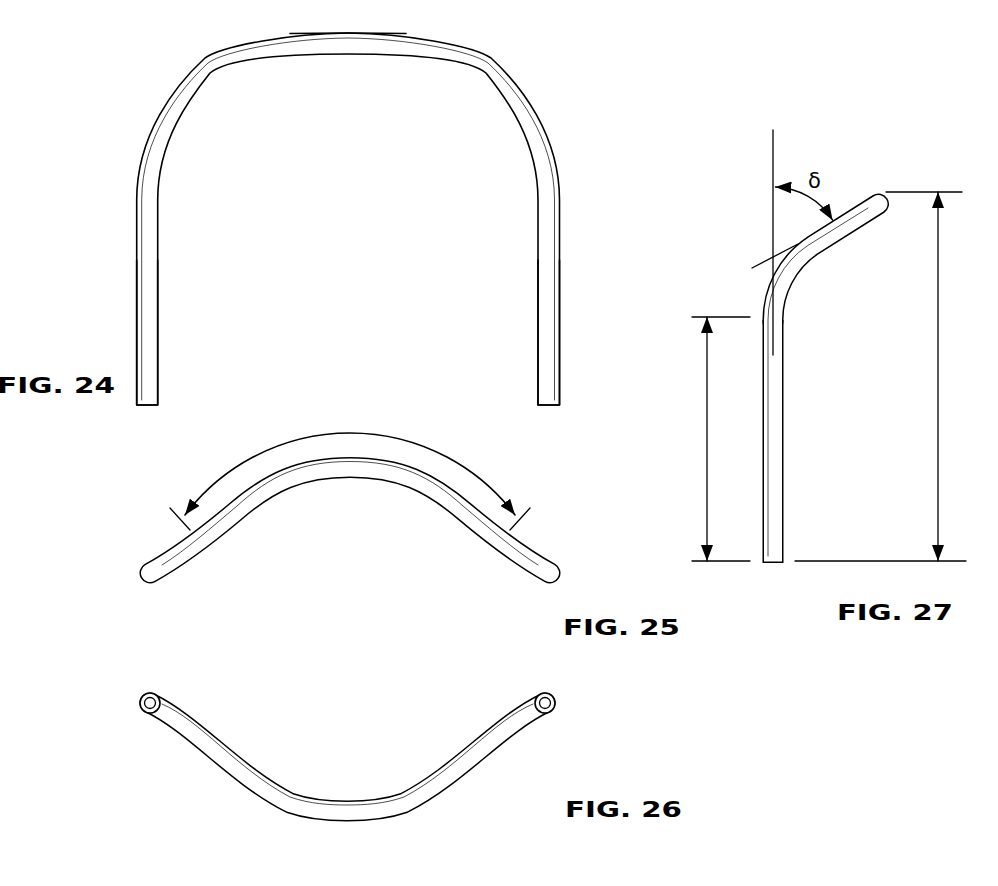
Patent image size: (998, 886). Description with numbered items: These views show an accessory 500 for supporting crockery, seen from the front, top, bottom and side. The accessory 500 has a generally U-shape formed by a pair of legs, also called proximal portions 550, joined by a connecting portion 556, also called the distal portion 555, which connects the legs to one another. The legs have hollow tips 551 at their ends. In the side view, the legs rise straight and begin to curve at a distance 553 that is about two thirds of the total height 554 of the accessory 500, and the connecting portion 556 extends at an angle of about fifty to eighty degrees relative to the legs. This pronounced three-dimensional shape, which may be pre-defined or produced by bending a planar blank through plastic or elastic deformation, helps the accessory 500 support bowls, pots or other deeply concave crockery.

In FIG. 24, the accessory 500 is at (556, 103).
In FIG. 25, the accessory 500 is at (354, 531).
In FIG. 26, the accessory 500 is at (336, 764).
In FIG. 27, the accessory 500 is at (834, 121).
In FIG. 24, the distal portion 555 is at (343, 43).
In FIG. 27, the distal portion 555 is at (880, 193).
In FIG. 25, the connecting portion 556 is at (328, 433).
In FIG. 27, the connecting portion 556 is at (798, 255).
In FIG. 26, the hollow tips 551 is at (140, 706).
In FIG. 26, the proximal portions 550 is at (156, 725).
In FIG. 27, the distance 553 is at (707, 379).
In FIG. 27, the total height 554 is at (938, 378).